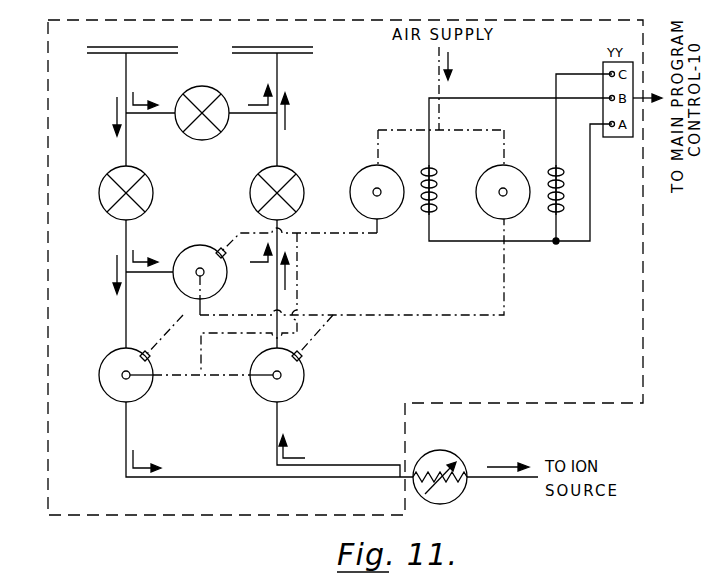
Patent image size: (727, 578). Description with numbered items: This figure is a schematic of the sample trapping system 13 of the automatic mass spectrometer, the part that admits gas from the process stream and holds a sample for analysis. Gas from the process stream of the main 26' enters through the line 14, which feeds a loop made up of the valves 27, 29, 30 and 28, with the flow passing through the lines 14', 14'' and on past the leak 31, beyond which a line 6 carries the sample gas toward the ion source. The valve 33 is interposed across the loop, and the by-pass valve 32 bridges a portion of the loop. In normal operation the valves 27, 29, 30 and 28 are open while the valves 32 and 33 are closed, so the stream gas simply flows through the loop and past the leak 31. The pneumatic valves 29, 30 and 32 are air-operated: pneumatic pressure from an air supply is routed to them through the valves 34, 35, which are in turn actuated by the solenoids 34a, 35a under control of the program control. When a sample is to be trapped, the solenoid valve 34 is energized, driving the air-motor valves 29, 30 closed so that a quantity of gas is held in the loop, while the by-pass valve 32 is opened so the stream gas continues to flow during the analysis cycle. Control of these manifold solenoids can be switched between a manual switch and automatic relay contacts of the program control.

The sample trapping system 13 is at (47, 72).
The main 26' is at (200, 39).
The line 14 is at (179, 109).
The line 14' is at (249, 439).
The line 14'' is at (318, 439).
The valve 27 is at (110, 171).
The valve 28 is at (263, 172).
The pneumatic valve 29 is at (108, 361).
The pneumatic valve 30 is at (304, 377).
The leak 31 is at (446, 450).
The by-pass valve 32 is at (186, 248).
The valve 33 is at (212, 90).
The solenoid valve 34 is at (360, 170).
The solenoid 34a is at (423, 180).
The pneumatic valve 35 is at (487, 170).
The solenoid 35a is at (562, 196).
The line to ion source 6 is at (488, 478).